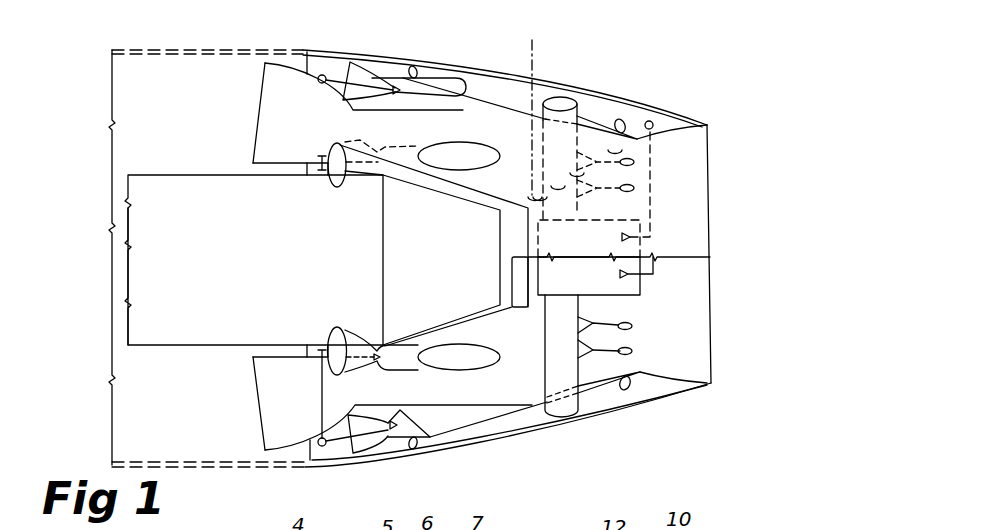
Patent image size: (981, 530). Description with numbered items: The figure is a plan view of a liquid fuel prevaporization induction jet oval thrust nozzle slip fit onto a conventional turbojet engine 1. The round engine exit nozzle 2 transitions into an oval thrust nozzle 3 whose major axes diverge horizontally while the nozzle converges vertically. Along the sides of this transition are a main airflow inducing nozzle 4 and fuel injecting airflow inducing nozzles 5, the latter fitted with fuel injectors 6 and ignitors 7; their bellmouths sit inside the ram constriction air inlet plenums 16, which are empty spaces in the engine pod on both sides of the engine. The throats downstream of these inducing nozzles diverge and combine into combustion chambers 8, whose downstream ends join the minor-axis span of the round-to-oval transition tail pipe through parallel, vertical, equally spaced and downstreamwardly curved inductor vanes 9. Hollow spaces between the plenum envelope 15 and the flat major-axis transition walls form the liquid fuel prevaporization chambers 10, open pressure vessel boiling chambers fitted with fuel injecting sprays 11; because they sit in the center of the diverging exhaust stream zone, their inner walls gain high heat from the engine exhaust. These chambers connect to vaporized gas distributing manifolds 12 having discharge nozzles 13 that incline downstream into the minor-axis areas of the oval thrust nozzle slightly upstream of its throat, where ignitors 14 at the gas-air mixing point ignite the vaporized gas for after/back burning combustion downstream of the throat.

The turbojet engine 1 is at (254, 260).
The round engine exit nozzle 2 is at (508, 250).
The oval thrust nozzle 3 is at (712, 318).
The main airflow inducing nozzle 4 is at (278, 58).
The fuel injecting airflow inducing nozzle 5 is at (361, 62).
The fuel injector 6 is at (397, 86).
The ignitor 7 is at (416, 66).
The combustion chamber 8 is at (477, 122).
The inductor vane 9 is at (535, 108).
The liquid fuel prevaporization chamber 10 is at (640, 288).
The fuel injecting spray 11 is at (631, 237).
The vaporized gas distributing manifold 12 is at (563, 100).
The discharge nozzle 13 is at (598, 120).
The ignitor 14 is at (627, 120).
The plenum envelope 15 is at (672, 112).
The ram constriction air inlet plenum 16 is at (207, 258).